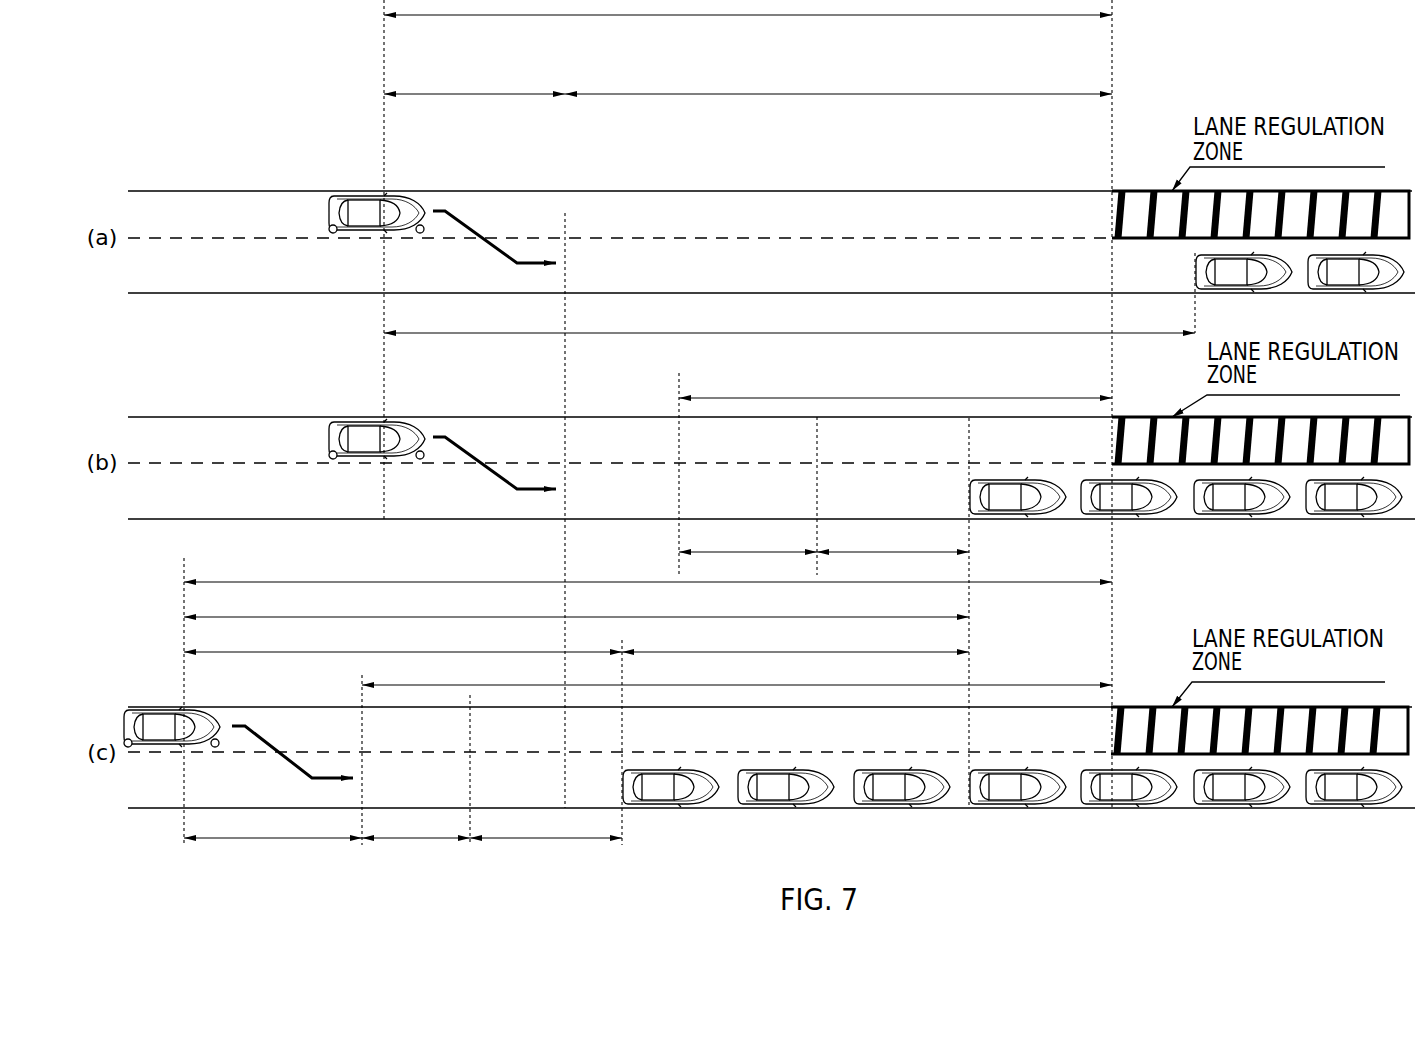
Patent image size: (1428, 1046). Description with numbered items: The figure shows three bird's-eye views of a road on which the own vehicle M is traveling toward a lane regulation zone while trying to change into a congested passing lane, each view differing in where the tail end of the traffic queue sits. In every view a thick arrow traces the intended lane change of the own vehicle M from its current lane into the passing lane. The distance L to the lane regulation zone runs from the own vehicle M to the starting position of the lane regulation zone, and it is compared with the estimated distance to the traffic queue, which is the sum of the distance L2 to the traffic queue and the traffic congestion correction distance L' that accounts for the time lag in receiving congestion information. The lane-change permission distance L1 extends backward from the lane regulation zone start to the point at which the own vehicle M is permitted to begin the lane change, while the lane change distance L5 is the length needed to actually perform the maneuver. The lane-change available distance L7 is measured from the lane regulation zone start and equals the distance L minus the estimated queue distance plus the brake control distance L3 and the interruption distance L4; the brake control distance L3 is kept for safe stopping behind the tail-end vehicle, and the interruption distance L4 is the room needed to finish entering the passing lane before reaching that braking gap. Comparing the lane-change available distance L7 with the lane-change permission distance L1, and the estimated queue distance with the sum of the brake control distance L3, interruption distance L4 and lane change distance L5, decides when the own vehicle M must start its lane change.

The own vehicle M is at (360, 194).
The distance to the lane regulation zone L is at (648, 291).
The lane-change permission distance L1 is at (838, 80).
The distance to the traffic queue L2 is at (689, 479).
The brake control distance L3 is at (719, 680).
The interruption distance L4 is at (589, 680).
The lane change distance L5 is at (374, 452).
The lane-change available distance L7 is at (737, 527).
The traffic congestion correction distance L' is at (795, 638).